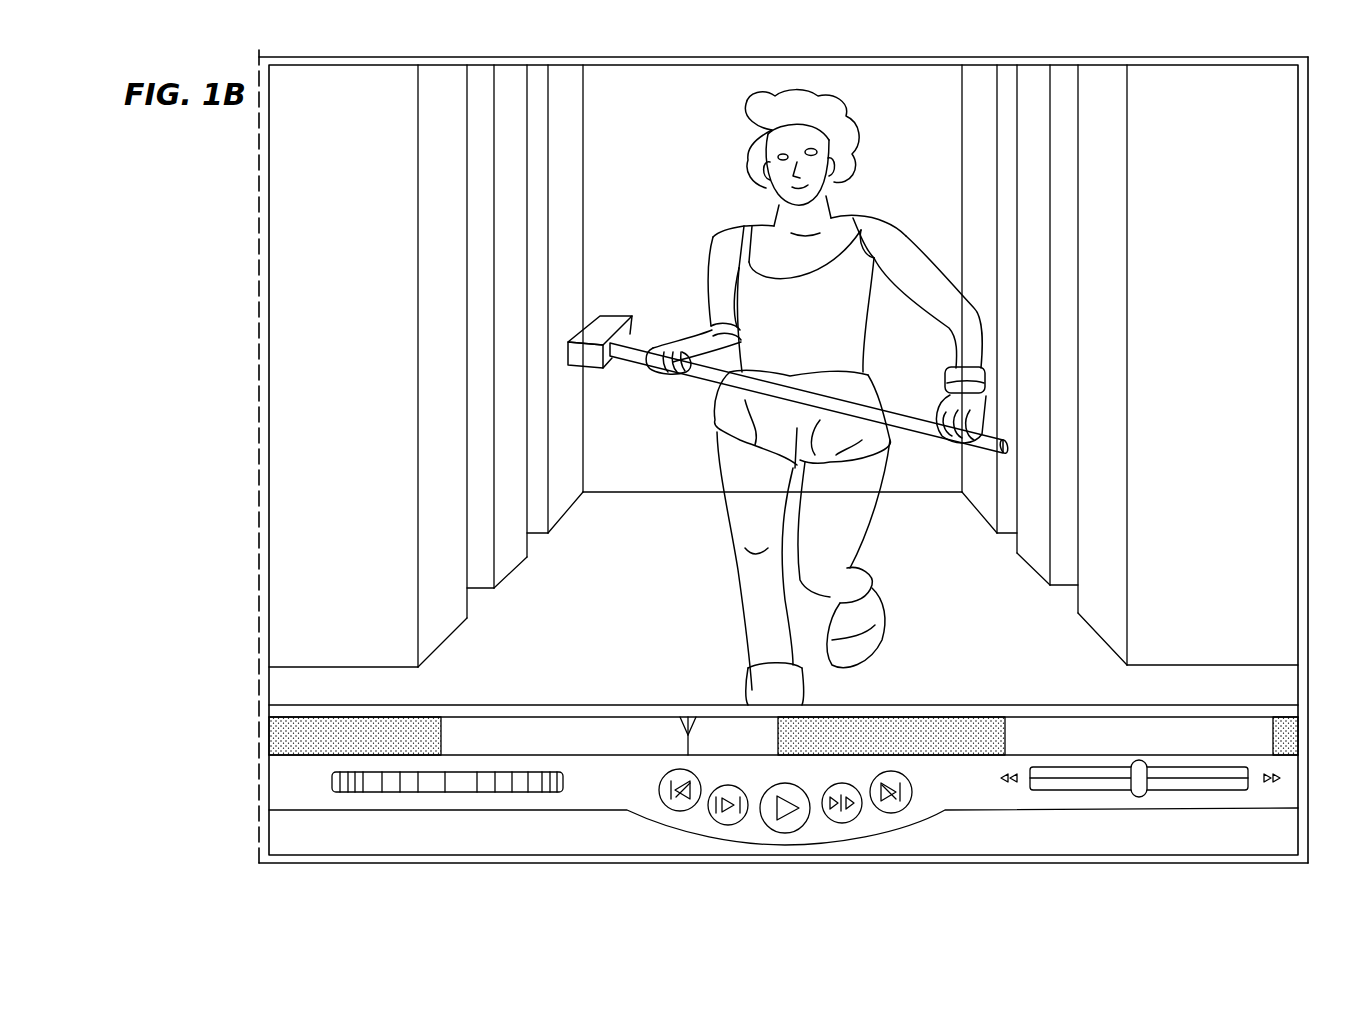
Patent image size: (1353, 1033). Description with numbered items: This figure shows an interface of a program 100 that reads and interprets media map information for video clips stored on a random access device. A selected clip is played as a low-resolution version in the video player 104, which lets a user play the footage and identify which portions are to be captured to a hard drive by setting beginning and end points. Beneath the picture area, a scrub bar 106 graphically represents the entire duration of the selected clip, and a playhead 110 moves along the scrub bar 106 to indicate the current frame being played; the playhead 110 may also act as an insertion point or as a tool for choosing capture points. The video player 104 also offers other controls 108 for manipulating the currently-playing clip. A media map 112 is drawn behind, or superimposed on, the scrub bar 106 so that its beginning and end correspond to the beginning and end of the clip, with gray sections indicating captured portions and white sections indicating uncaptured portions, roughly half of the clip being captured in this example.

The program 100 is at (222, 256).
The video player 104 is at (310, 416).
The scrub bar 106 is at (1114, 742).
The controls 108 is at (468, 802).
The playhead 110 is at (674, 730).
The media map 112 is at (298, 722).